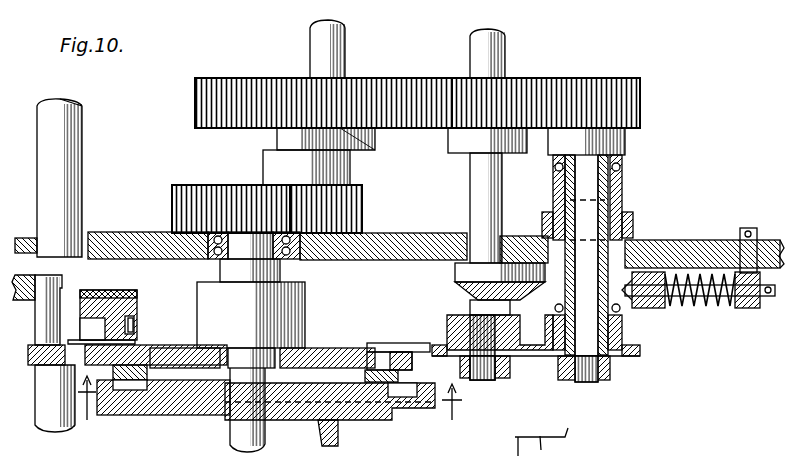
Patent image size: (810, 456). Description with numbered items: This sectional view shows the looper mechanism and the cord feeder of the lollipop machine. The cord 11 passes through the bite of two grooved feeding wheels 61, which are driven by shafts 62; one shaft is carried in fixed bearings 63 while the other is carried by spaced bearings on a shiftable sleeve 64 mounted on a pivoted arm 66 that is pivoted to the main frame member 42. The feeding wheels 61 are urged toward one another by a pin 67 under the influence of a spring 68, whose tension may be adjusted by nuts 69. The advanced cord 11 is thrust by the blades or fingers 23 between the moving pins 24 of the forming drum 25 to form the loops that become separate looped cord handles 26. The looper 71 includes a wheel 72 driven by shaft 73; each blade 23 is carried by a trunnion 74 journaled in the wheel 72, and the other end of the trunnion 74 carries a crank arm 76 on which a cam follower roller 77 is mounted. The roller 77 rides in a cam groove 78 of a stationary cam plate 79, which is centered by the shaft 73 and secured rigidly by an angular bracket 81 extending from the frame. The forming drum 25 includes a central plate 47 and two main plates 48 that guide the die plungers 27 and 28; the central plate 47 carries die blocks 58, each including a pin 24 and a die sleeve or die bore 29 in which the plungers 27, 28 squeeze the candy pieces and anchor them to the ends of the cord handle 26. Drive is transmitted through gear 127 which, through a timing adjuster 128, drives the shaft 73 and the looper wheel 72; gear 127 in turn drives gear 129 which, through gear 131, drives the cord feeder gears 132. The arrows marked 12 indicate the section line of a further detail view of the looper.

The cord 11 is at (537, 345).
The direction arrow 12 is at (272, 410).
The blade 23 is at (410, 343).
The pin 24 is at (135, 325).
The forming drum 25 is at (144, 298).
The looped cord handle 26 is at (136, 342).
The die plunger 27 is at (42, 386).
The die plunger 28 is at (68, 118).
The die sleeve 29 is at (36, 312).
The main frame member 42 is at (702, 248).
The central plate 47 is at (22, 258).
The main plate 48 is at (24, 238).
The die block 58 is at (30, 326).
The feeding wheel 61 is at (548, 356).
The shaft 62 is at (478, 380).
The fixed bearing 63 is at (448, 282).
The shiftable sleeve 64 is at (553, 186).
The pivoted arm 66 is at (545, 218).
The pin 67 is at (700, 308).
The spring 68 is at (732, 308).
The nut 69 is at (662, 310).
The looper 71 is at (336, 350).
The wheel 72 is at (318, 348).
The shaft 73 is at (232, 432).
The trunnion 74 is at (380, 352).
The crank arm 76 is at (400, 376).
The cam follower roller 77 is at (130, 400).
The cam groove 78 is at (406, 393).
The cam plate 79 is at (380, 420).
The angular bracket 81 is at (318, 440).
The gear 127 is at (176, 200).
The timing adjuster 128 is at (206, 158).
The gear 129 is at (362, 209).
The gear 131 is at (420, 80).
The cord feeder gear 132 is at (556, 80).